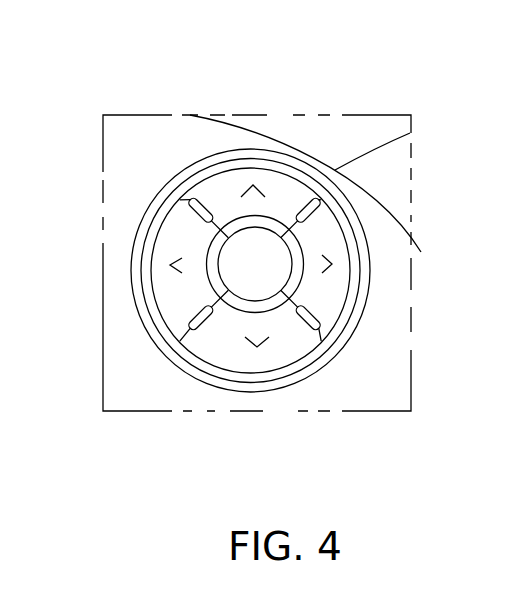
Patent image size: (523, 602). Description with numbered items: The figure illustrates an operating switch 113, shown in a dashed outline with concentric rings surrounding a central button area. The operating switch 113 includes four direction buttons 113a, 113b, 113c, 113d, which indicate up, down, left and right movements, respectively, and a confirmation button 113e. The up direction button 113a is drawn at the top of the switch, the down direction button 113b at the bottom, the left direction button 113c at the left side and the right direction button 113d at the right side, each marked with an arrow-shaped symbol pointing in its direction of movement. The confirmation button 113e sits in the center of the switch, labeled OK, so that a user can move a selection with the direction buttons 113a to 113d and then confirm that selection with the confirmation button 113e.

The operating switch 113 is at (97, 99).
The direction button 113a is at (268, 184).
The direction button 113b is at (285, 348).
The direction button 113c is at (165, 270).
The direction button 113d is at (332, 290).
The confirmation button 113e is at (278, 258).